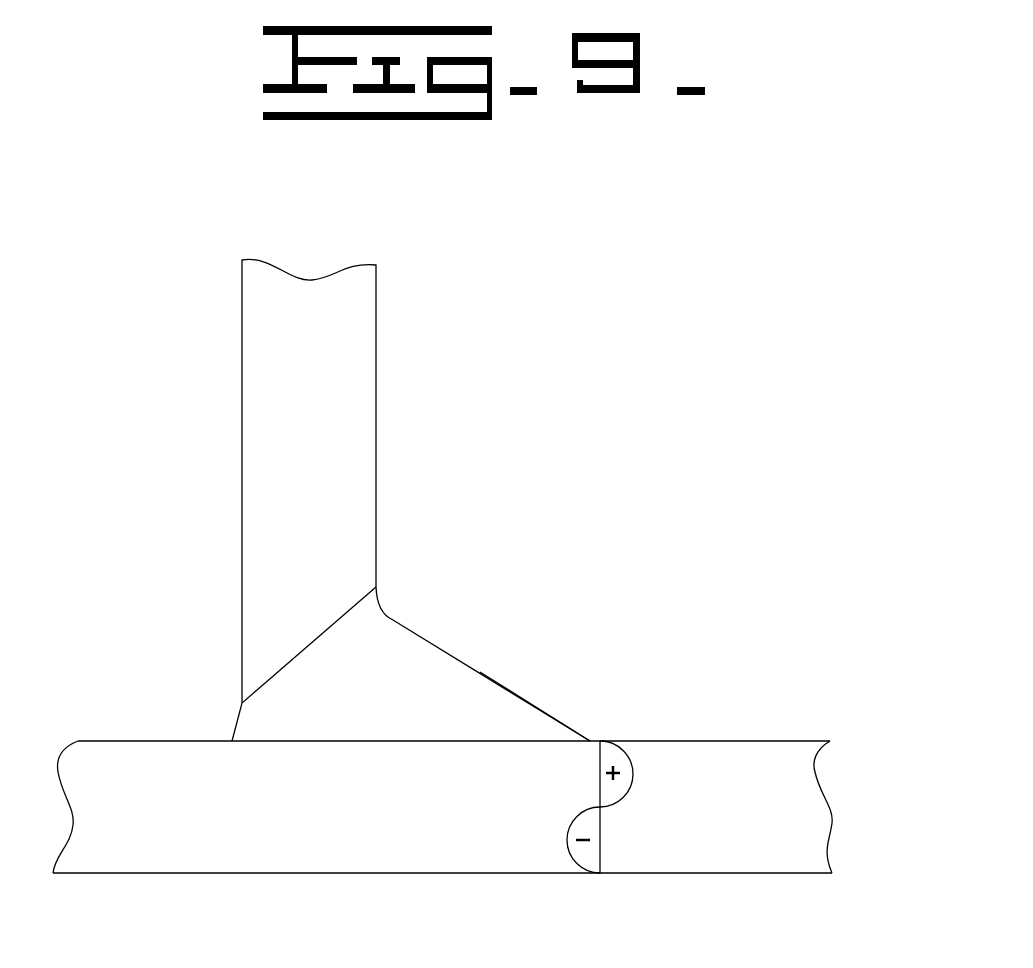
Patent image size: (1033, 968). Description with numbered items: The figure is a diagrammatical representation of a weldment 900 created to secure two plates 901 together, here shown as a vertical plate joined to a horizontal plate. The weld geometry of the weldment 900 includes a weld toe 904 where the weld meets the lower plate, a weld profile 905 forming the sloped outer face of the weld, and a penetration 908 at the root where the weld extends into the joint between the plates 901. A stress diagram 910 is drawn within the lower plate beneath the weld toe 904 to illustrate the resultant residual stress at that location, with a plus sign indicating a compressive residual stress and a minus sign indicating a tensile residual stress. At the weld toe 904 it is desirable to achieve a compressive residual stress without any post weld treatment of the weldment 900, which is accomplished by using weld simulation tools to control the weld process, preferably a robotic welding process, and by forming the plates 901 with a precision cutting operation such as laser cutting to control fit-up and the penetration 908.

The weldment 900 is at (611, 613).
The plates 901 is at (258, 508).
The weld toe 904 is at (553, 713).
The weld profile 905 is at (458, 655).
The penetration 908 is at (243, 729).
The stress diagram 910 is at (633, 853).